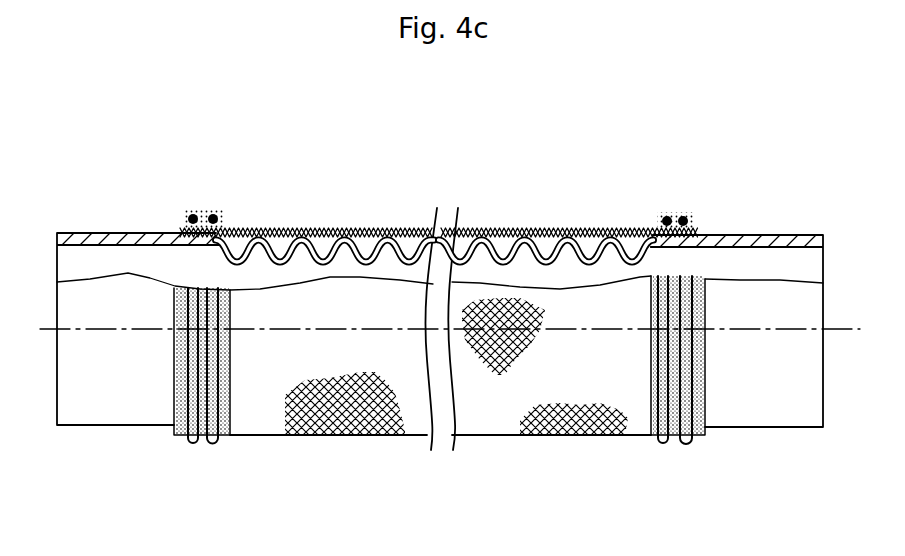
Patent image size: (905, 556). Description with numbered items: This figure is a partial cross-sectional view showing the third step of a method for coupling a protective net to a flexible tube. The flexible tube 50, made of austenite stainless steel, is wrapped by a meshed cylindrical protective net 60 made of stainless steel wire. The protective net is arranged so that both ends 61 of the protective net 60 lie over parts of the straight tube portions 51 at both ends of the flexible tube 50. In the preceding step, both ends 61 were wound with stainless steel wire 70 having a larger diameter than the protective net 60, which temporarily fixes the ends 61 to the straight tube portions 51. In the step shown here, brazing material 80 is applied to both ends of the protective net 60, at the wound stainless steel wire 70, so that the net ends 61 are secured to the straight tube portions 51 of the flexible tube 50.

The flexible tube 50 is at (515, 232).
The straight tube portions 51 is at (772, 234).
The protective net 60 is at (370, 218).
The ends of the protective net 61 is at (700, 232).
The stainless steel wire 70 is at (656, 220).
The brazing material 80 is at (670, 220).